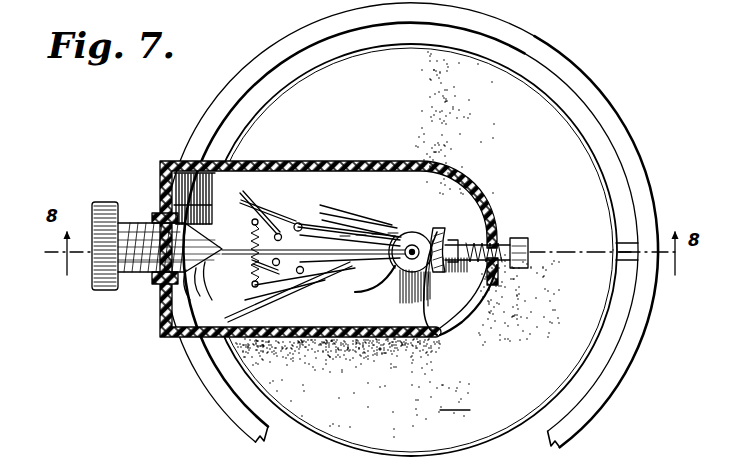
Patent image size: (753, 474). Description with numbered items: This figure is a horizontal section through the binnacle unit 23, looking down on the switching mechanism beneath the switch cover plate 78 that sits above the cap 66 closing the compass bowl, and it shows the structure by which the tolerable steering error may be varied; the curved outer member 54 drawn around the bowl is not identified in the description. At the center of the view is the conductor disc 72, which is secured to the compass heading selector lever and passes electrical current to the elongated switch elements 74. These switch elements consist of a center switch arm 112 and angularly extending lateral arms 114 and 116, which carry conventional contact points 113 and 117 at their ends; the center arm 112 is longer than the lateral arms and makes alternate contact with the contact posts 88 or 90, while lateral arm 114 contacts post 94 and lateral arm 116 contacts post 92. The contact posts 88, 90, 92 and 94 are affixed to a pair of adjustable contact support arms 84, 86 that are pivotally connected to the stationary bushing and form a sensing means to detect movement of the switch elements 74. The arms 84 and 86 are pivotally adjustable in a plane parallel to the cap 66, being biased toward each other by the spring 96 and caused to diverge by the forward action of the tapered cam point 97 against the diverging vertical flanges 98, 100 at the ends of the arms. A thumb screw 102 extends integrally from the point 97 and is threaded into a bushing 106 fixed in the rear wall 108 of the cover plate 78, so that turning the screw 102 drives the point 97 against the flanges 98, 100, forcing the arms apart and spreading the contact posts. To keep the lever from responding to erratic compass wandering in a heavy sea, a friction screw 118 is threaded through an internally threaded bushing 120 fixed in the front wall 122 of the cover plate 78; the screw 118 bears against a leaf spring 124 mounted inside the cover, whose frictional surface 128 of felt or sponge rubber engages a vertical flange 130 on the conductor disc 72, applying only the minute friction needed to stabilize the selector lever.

The binnacle unit 23 is at (607, 164).
The outer ring 54 is at (583, 72).
The cap 66 is at (455, 402).
The conductor disc 72 is at (412, 232).
The switch elements 74 is at (380, 284).
The switch cover plate 78 is at (316, 163).
The adjustable contact support arm 84 is at (255, 192).
The adjustable contact support arm 86 is at (216, 294).
The contact post 88 is at (298, 222).
The contact post 90 is at (274, 292).
The contact post 92 is at (303, 222).
The contact post 94 is at (320, 284).
The spring 96 is at (260, 274).
The tapered cam point 97 is at (232, 233).
The diverging vertical flange 98 is at (200, 282).
The diverging vertical flange 100 is at (224, 220).
The thumb screw 102 is at (93, 276).
The bushing 106 is at (154, 280).
The rear wall 108 is at (160, 314).
The center switch arm 112 is at (350, 232).
The contact point 113 is at (290, 292).
The lateral arm 114 is at (334, 268).
The lateral arm 116 is at (352, 228).
The contact point 117 is at (336, 214).
The friction screw 118 is at (530, 240).
The internally threaded bushing 120 is at (512, 238).
The front wall 122 is at (496, 271).
The leaf spring 124 is at (428, 302).
The frictional surface 128 is at (447, 238).
The vertical flange 130 is at (436, 230).